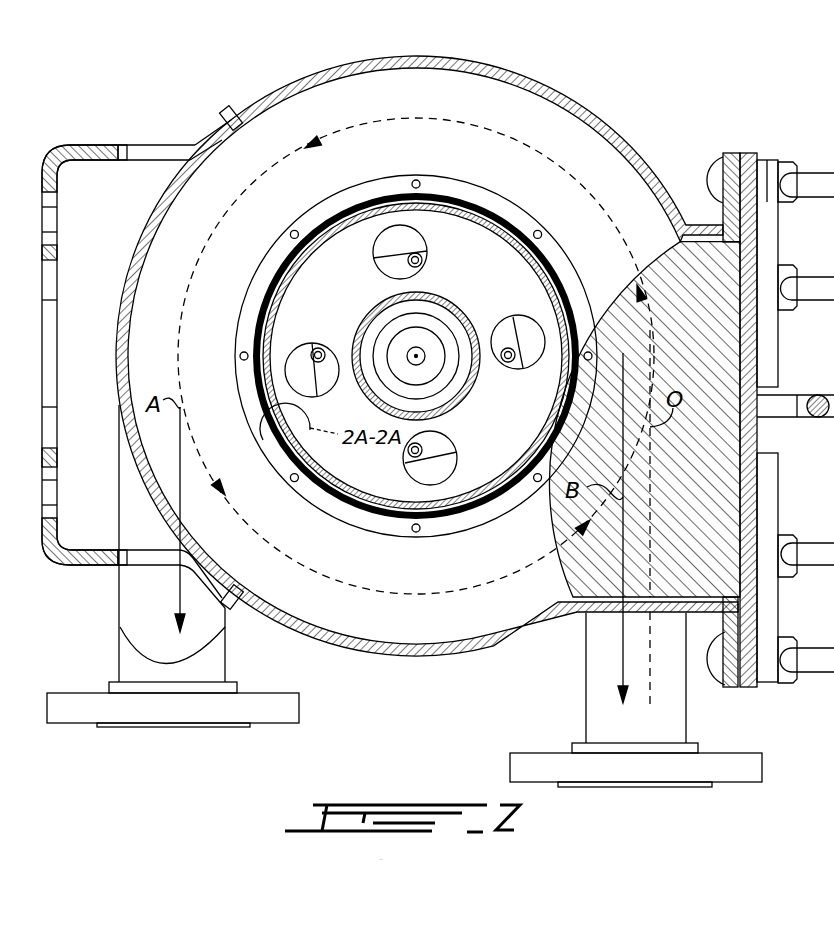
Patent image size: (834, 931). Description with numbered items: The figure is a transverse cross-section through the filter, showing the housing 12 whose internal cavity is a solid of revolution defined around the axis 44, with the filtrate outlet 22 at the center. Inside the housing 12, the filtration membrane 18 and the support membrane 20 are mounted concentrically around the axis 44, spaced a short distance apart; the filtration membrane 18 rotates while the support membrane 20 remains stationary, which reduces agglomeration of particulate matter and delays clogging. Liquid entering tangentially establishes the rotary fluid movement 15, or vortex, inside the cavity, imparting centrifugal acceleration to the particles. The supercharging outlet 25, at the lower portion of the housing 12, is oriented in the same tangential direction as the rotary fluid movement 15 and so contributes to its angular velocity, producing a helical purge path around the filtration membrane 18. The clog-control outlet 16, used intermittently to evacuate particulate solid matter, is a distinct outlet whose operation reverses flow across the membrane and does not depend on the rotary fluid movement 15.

The housing 12 is at (583, 92).
The rotary fluid movement 15 is at (202, 257).
The clog-control outlet 16 is at (598, 686).
The filtration membrane 18 is at (358, 203).
The support membrane 20 is at (497, 233).
The filtrate outlet 22 is at (417, 340).
The supercharging outlet 25 is at (150, 612).
The axis 44 is at (425, 355).